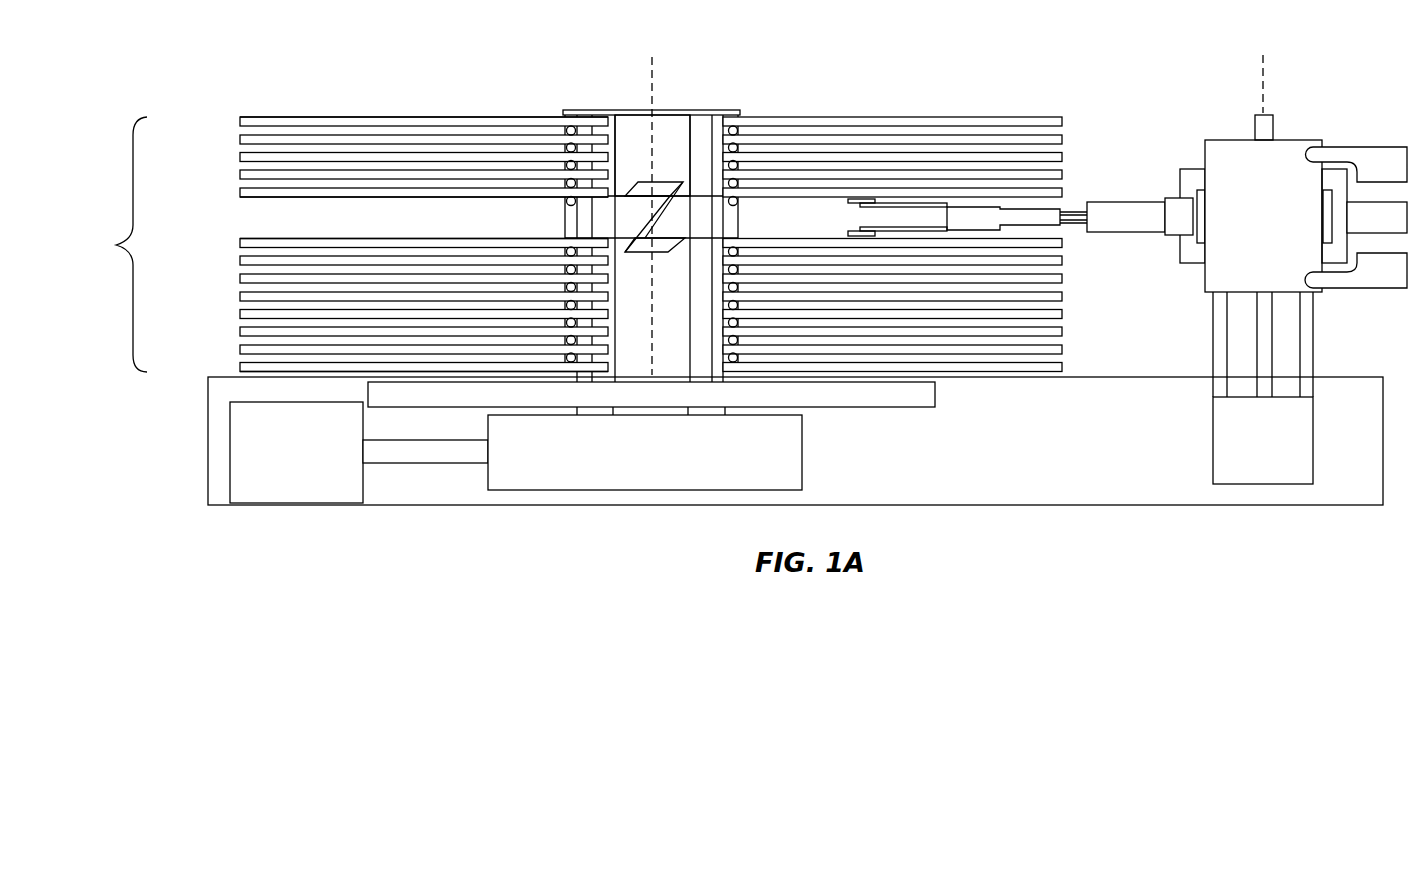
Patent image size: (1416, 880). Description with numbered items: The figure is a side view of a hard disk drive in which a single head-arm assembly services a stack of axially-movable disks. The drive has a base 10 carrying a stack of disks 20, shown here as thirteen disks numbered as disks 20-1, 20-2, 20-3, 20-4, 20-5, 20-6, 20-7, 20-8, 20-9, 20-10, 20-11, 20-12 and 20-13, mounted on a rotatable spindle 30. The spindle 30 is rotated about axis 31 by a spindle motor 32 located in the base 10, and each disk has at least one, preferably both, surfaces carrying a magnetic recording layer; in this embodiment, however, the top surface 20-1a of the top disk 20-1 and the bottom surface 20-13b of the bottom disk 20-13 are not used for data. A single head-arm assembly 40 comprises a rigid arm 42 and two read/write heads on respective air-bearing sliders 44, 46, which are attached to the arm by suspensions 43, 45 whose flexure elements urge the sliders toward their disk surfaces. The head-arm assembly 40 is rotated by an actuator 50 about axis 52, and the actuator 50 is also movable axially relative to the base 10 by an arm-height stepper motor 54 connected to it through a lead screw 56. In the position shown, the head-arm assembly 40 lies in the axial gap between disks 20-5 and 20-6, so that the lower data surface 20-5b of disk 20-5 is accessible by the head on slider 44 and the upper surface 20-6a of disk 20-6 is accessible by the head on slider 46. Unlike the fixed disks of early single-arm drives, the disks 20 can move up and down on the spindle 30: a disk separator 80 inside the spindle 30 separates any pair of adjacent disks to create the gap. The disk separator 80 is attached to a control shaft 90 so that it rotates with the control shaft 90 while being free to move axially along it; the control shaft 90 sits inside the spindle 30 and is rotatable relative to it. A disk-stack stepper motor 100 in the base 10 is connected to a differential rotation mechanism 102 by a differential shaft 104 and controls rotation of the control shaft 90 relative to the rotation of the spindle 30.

The base 10 is at (1040, 507).
The stack of disks 20 is at (117, 244).
The top disk 20-1 is at (240, 120).
The disk 20-2 is at (240, 138).
The disk 20-3 is at (240, 157).
The disk 20-4 is at (240, 175).
The disk 20-5 is at (240, 194).
The disk 20-6 is at (240, 243).
The disk 20-7 is at (240, 262).
The disk 20-8 is at (240, 279).
The disk 20-9 is at (240, 296).
The disk 20-10 is at (240, 314).
The disk 20-11 is at (1062, 329).
The disk 20-12 is at (1062, 347).
The bottom disk 20-13 is at (1062, 365).
The top surface of the top disk 20-1a is at (332, 117).
The lower data surface of disk 20-5 20-5b is at (332, 197).
The upper surface of disk 20-6 20-6a is at (430, 238).
The bottom surface of the bottom disk 20-13b is at (252, 373).
The rotatable spindle 30 is at (705, 110).
The axis 31 is at (655, 80).
The spindle motor 32 is at (875, 408).
The head-arm assembly 40 is at (988, 148).
The rigid arm 42 is at (1122, 204).
The suspension 43 is at (965, 207).
The air-bearing slider 44 is at (868, 199).
The suspension 45 is at (1048, 226).
The air-bearing slider 46 is at (855, 232).
The actuator 50 is at (1348, 97).
The axis 52 is at (1265, 80).
The arm-height stepper motor 54 is at (1293, 485).
The lead screw 56 is at (1273, 343).
The disk separator 80 is at (598, 229).
The control shaft 90 is at (630, 118).
The disk-stack stepper motor 100 is at (230, 483).
The differential rotation mechanism 102 is at (538, 490).
The differential shaft 104 is at (455, 464).